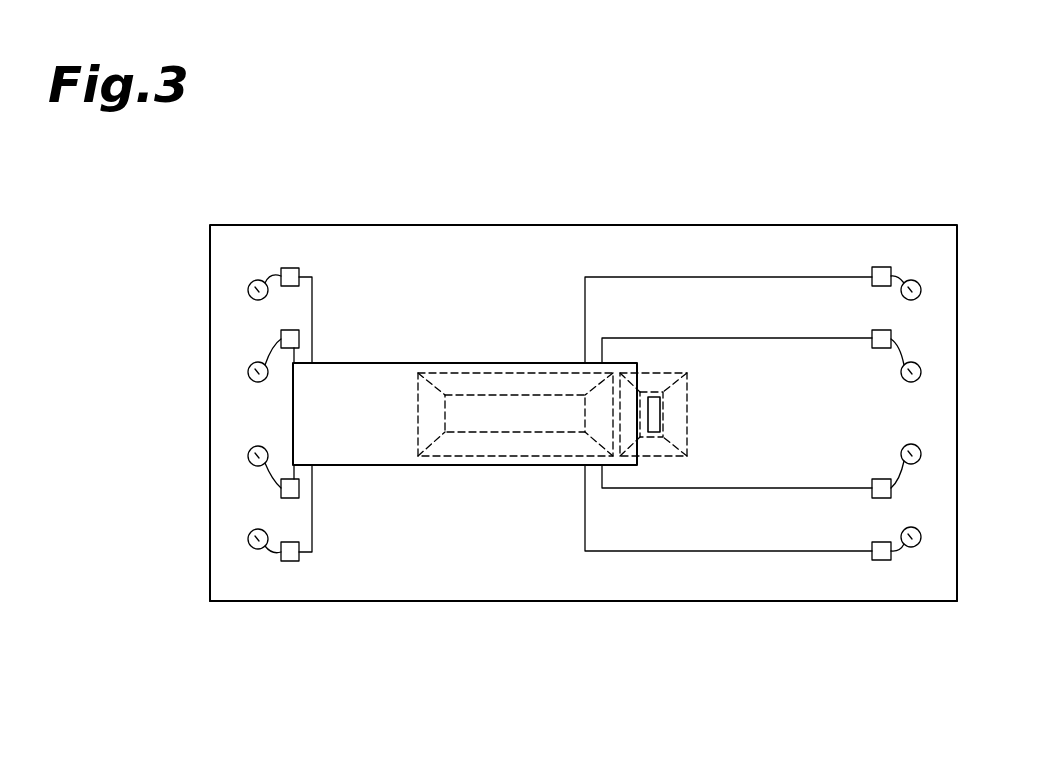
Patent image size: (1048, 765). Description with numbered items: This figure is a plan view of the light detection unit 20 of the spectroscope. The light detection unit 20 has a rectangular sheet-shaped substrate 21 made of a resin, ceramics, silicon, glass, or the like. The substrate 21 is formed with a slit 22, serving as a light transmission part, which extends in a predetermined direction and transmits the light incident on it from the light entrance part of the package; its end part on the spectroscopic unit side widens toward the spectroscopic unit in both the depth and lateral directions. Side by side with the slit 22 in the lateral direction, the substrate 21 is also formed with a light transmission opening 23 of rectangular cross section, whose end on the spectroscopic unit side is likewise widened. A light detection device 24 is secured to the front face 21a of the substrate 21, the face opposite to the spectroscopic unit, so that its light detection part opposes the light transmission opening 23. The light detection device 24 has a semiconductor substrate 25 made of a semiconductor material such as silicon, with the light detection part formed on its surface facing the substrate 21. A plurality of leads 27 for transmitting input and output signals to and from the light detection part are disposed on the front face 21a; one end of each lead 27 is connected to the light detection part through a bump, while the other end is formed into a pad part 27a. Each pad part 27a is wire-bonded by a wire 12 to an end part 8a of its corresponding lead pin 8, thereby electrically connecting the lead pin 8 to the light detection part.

The light detection unit 20 is at (975, 185).
The substrate 21 is at (504, 607).
The front face 21a is at (588, 587).
The slit 22 is at (660, 415).
The light transmission opening 23 is at (486, 404).
The light detection device 24 is at (408, 472).
The semiconductor substrate 25 is at (365, 362).
The lead 27 is at (312, 288).
The pad part 27a is at (292, 270).
The wire 12 is at (265, 278).
The lead pin 8 is at (248, 289).
The end part 8a is at (253, 282).